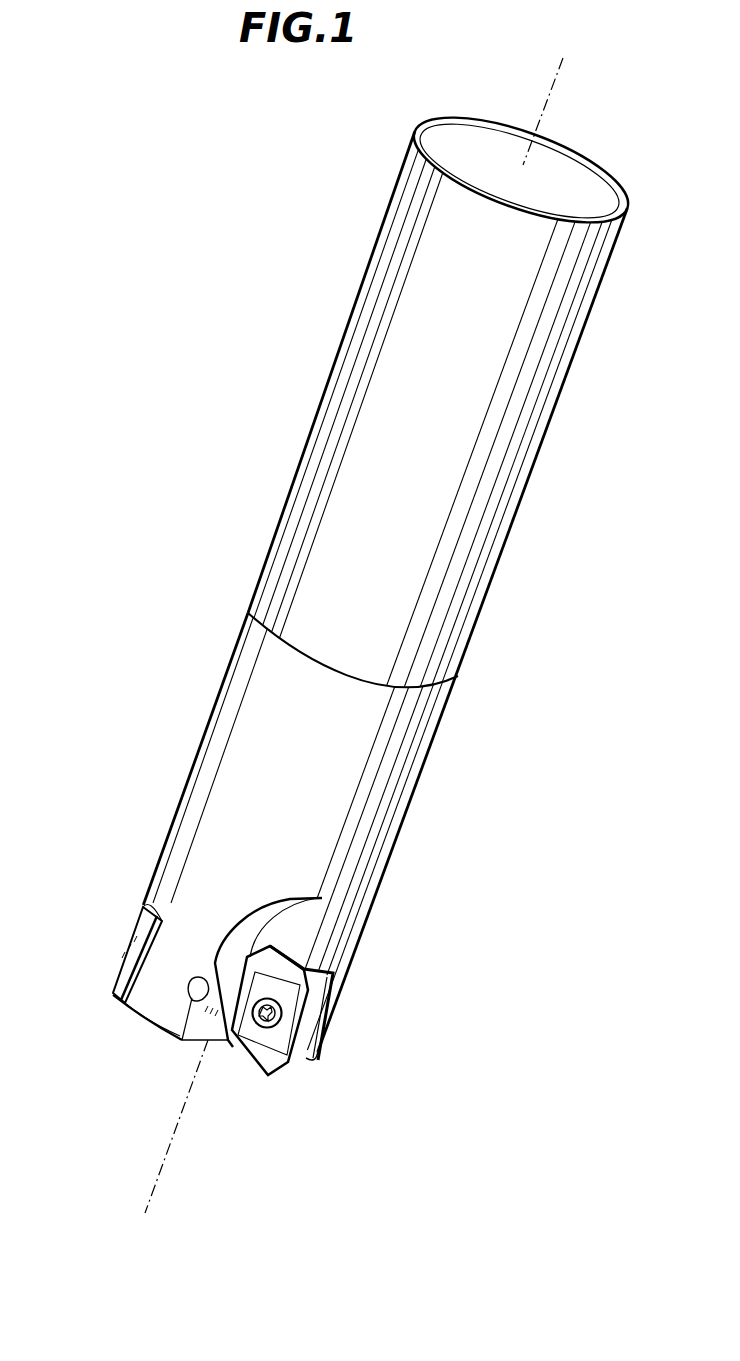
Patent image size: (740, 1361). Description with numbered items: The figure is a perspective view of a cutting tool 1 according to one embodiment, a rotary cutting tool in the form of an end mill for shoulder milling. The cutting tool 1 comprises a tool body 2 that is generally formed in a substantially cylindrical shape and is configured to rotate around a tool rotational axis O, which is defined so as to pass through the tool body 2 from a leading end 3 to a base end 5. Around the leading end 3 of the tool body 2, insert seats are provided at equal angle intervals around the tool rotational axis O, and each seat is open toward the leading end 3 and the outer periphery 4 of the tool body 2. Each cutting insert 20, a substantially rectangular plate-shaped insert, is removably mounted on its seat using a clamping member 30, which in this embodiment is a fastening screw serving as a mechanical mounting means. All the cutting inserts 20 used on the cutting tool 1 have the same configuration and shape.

The cutting tool 1 is at (395, 353).
The tool body 2 is at (240, 828).
The leading end 3 is at (187, 1044).
The outer periphery 4 is at (332, 940).
The base end 5 is at (512, 162).
The cutting insert 20 is at (120, 972).
The clamping member 30 is at (290, 1013).
The tool rotational axis O is at (153, 1186).